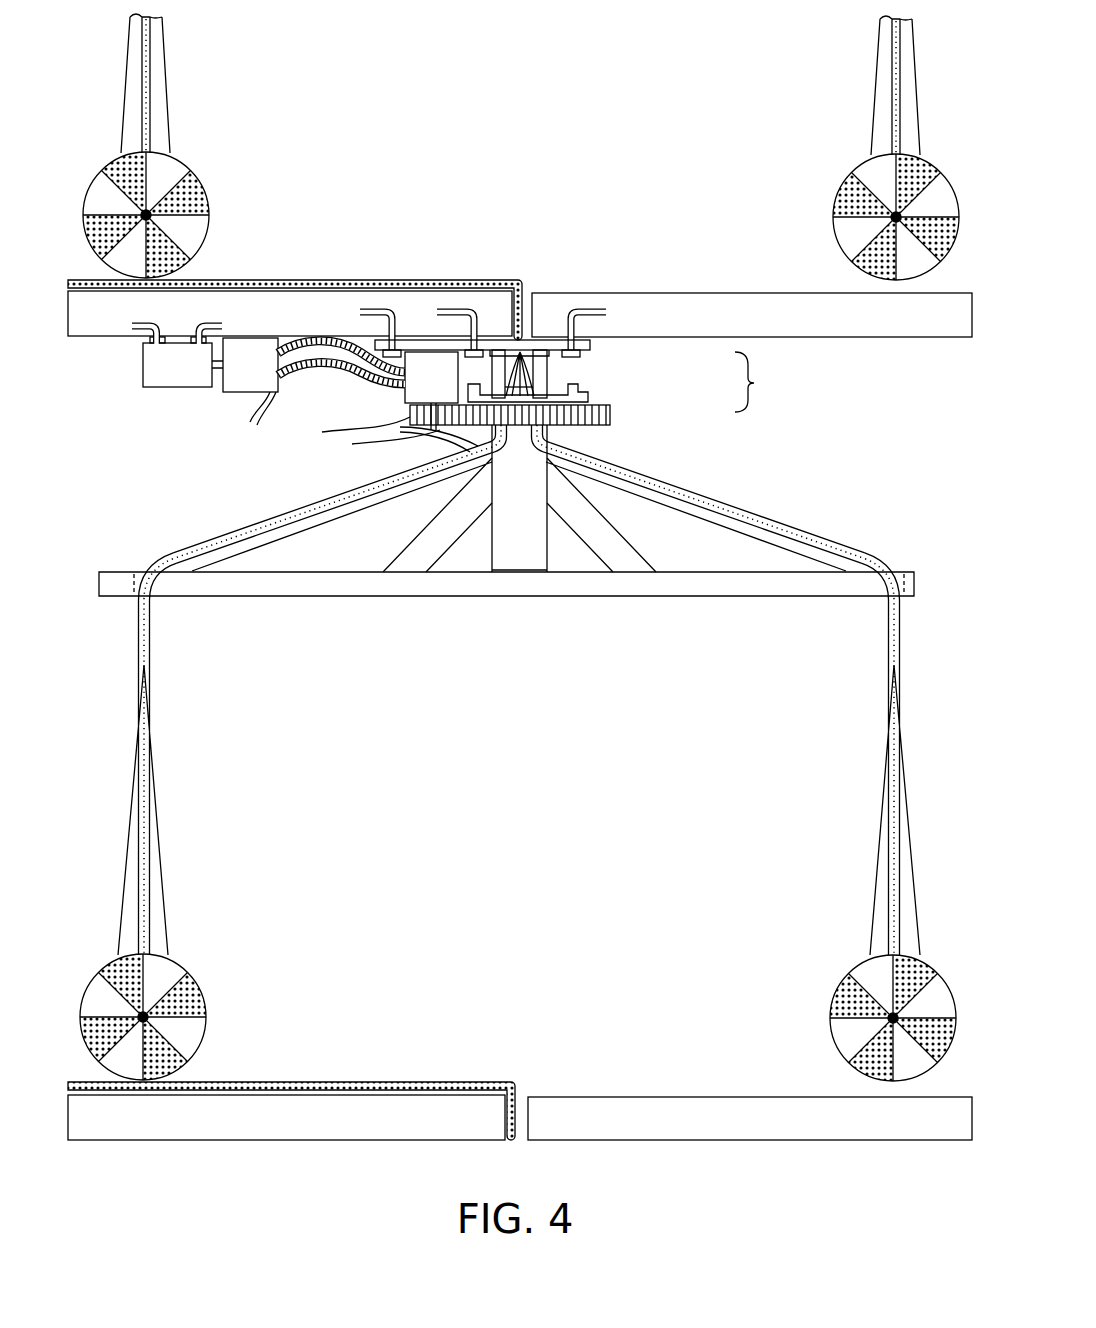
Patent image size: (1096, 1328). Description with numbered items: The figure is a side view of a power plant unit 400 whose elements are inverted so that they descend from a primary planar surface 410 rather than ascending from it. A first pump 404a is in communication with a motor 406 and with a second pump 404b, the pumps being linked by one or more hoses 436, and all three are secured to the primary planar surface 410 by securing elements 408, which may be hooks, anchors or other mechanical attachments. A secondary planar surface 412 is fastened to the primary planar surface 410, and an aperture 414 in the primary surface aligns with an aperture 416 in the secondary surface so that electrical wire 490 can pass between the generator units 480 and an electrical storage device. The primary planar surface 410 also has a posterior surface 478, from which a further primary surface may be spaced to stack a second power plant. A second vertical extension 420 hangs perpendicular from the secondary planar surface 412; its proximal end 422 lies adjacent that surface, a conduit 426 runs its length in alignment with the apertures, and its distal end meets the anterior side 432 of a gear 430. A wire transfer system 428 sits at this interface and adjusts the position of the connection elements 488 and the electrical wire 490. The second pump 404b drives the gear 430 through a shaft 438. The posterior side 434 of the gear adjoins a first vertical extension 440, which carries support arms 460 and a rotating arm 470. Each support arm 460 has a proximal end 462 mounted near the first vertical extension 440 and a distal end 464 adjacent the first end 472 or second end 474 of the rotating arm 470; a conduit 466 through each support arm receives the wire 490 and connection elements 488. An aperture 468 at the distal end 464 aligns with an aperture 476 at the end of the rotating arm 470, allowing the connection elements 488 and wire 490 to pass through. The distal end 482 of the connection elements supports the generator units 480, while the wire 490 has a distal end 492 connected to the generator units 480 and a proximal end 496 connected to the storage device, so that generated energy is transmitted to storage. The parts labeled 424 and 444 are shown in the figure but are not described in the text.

The power plant unit 400 is at (283, 1164).
The first pump 404a is at (280, 338).
The second pump 404b is at (425, 350).
The motor 406 is at (143, 382).
The securing elements 408 is at (372, 312).
The primary planar surface 410 is at (126, 338).
The secondary planar surface 412 is at (592, 345).
The aperture 414 is at (528, 342).
The aperture 416 is at (545, 372).
The second vertical extension 420 is at (548, 359).
The proximal end 422 is at (503, 352).
The bracket channel 424 is at (572, 392).
The conduit 426 is at (611, 411).
The wire transfer system 428 is at (760, 382).
The gear 430 is at (381, 440).
The anterior side 432 is at (343, 362).
The posterior side 434 is at (351, 425).
The hoses 436 is at (265, 421).
The shaft 438 is at (431, 415).
The first vertical extension 440 is at (490, 506).
The column base 444 is at (492, 568).
The support arms 460 is at (280, 522).
The proximal end 462 is at (480, 449).
The distal end 464 is at (435, 439).
The conduit 466 is at (228, 538).
The aperture 468 is at (148, 560).
The rotating arm 470 is at (278, 597).
The first end 472 is at (100, 572).
The second end 474 is at (912, 572).
The aperture 476 is at (152, 606).
The posterior surface 478 is at (715, 293).
The generator units 480 is at (199, 991).
The distal end 482 is at (118, 955).
The connection elements 488 is at (163, 857).
The electrical wire 490 is at (256, 280).
The distal end 492 is at (150, 955).
The proximal end 496 is at (84, 292).